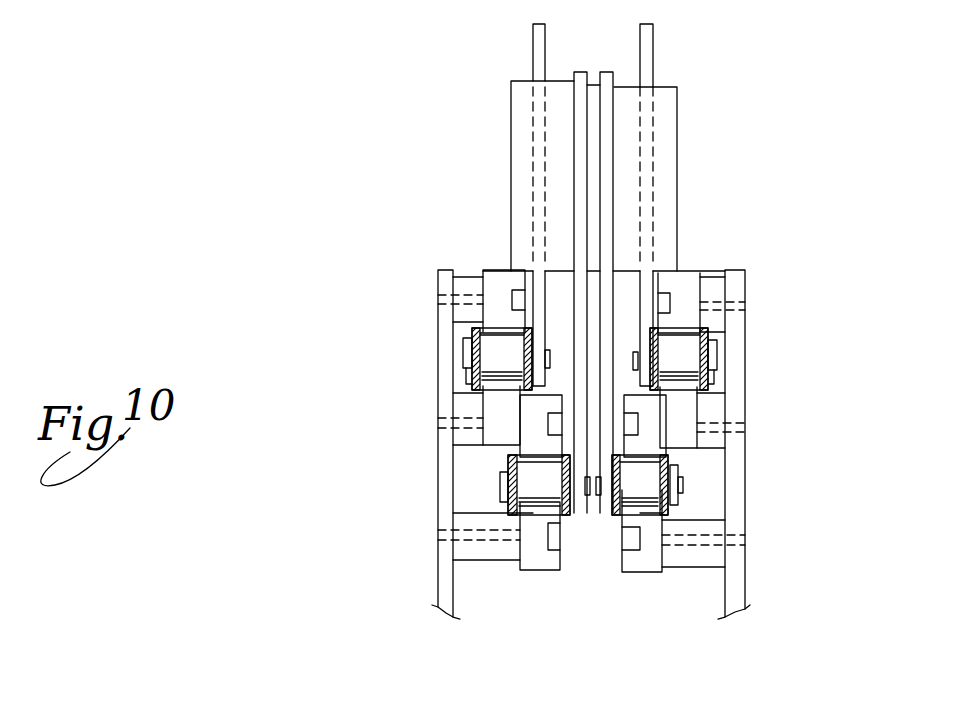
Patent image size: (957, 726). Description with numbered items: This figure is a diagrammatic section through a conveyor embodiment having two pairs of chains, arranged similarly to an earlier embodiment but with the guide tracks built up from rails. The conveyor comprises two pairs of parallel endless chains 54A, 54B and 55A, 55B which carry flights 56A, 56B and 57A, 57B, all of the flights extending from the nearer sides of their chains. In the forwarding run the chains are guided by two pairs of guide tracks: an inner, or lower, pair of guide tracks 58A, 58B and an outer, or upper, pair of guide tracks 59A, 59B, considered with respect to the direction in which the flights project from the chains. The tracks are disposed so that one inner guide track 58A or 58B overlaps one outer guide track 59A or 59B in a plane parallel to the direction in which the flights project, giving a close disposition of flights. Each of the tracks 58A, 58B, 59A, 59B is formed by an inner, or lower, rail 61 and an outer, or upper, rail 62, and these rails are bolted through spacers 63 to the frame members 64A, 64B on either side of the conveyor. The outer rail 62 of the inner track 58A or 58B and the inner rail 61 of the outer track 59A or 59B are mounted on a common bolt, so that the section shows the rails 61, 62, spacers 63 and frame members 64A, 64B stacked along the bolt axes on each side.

The endless chain 54A is at (532, 483).
The endless chain 54B is at (680, 488).
The endless chain 55A is at (497, 358).
The endless chain 55B is at (678, 360).
The flight 56A is at (582, 130).
The flight 56B is at (607, 137).
The flight 57A is at (538, 53).
The flight 57B is at (650, 57).
The inner guide track 58A is at (534, 514).
The inner guide track 58B is at (641, 514).
The outer guide track 59A is at (503, 328).
The outer guide track 59B is at (678, 328).
The inner rail 61 is at (498, 417).
The outer rail 62 is at (488, 288).
The spacer 63 is at (463, 288).
The frame member 64A is at (447, 578).
The frame member 64B is at (733, 593).